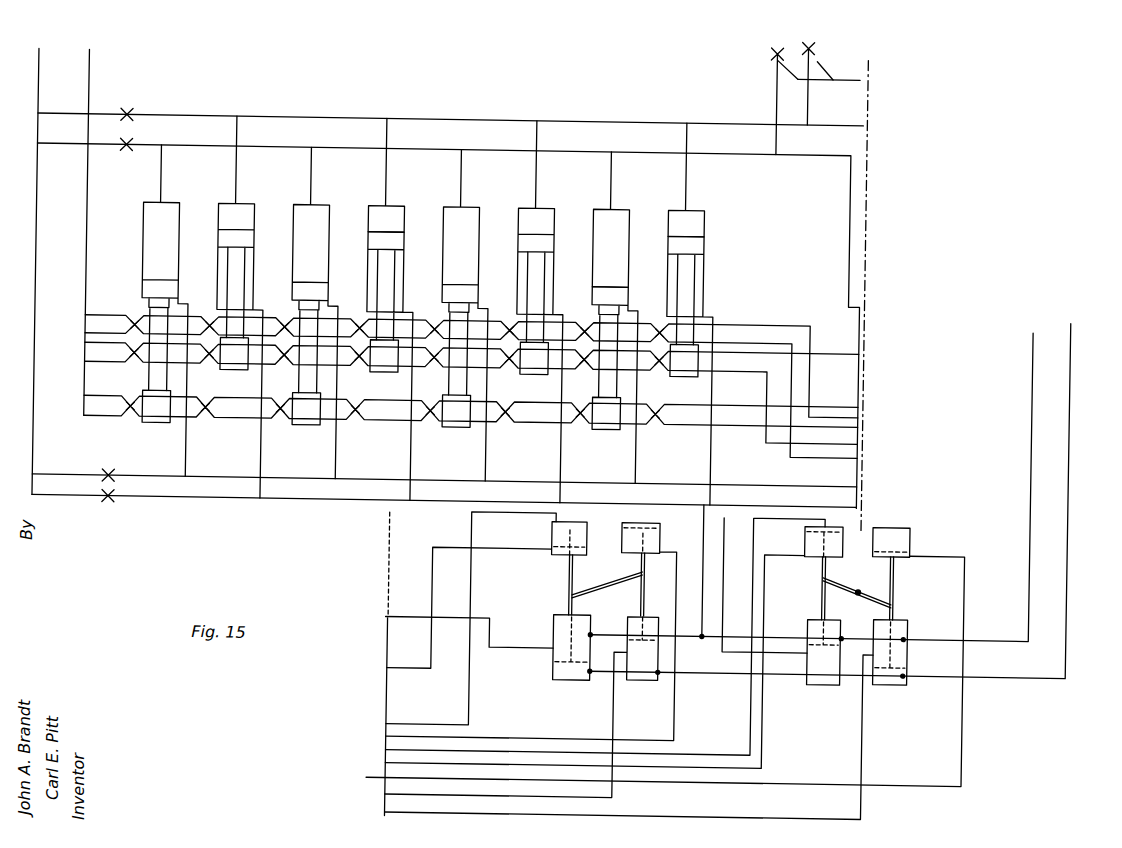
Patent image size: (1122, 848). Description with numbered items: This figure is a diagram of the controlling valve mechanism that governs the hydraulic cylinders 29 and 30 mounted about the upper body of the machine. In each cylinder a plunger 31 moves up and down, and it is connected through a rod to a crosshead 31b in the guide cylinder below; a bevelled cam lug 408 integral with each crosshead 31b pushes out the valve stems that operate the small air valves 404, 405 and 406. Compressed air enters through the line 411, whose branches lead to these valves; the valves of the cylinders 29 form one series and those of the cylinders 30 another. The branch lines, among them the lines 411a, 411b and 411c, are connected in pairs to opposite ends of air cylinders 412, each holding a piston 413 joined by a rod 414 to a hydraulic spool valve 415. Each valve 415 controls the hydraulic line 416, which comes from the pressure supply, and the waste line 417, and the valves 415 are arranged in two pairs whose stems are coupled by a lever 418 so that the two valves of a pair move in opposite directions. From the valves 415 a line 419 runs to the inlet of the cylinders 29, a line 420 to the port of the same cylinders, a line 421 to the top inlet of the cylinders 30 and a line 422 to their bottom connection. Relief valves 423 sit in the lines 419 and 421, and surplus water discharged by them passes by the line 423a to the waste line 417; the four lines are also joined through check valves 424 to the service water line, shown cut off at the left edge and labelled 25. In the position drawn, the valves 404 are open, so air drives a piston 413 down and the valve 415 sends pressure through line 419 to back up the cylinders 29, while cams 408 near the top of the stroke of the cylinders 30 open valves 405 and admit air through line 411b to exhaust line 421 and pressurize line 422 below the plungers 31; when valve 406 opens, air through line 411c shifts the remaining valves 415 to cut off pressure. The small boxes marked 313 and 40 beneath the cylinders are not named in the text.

The supply line 25 is at (34, 99).
The compressed air line 411 is at (84, 93).
The check valves 424 is at (125, 121).
The hydraulic cylinders 29 is at (174, 209).
The hydraulic cylinders 30 is at (251, 209).
The plunger 31 is at (364, 252).
The valve 406 is at (135, 321).
The valve 405 is at (134, 352).
The valve 404 is at (127, 424).
The cam lug 408 is at (174, 424).
The crosshead 31b is at (303, 428).
The conduit 411a is at (372, 433).
The valve 40 is at (450, 428).
The branch air line 411b is at (356, 366).
The valve 313 is at (698, 384).
The branch air line 411c is at (762, 344).
The line 419 is at (804, 158).
The relief valves 423 is at (772, 50).
The line 423a is at (853, 74).
The line 421 is at (858, 125).
The line 420 is at (808, 478).
The line 422 is at (859, 499).
The air cylinders 412 is at (590, 535).
The piston 413 is at (557, 558).
The lever 418 is at (603, 582).
The rod 414 is at (571, 594).
The hydraulic valve 415 is at (641, 615).
The waste line 417 is at (1031, 440).
The hydraulic line 416 is at (1069, 431).